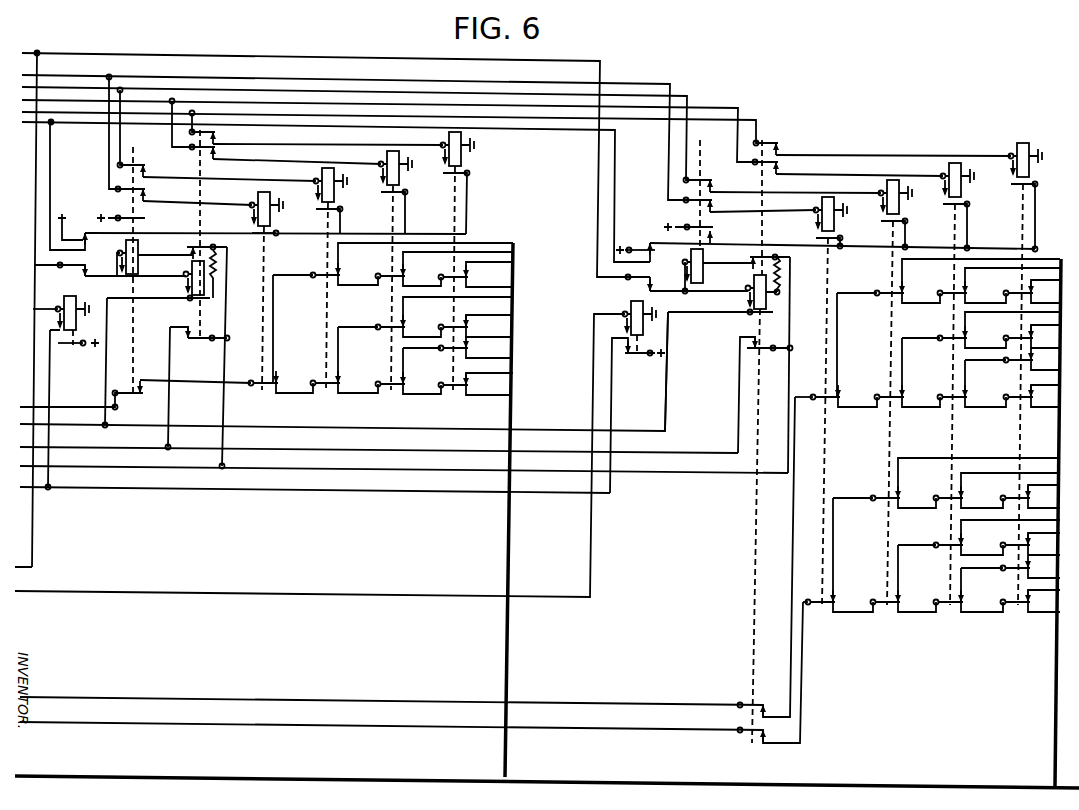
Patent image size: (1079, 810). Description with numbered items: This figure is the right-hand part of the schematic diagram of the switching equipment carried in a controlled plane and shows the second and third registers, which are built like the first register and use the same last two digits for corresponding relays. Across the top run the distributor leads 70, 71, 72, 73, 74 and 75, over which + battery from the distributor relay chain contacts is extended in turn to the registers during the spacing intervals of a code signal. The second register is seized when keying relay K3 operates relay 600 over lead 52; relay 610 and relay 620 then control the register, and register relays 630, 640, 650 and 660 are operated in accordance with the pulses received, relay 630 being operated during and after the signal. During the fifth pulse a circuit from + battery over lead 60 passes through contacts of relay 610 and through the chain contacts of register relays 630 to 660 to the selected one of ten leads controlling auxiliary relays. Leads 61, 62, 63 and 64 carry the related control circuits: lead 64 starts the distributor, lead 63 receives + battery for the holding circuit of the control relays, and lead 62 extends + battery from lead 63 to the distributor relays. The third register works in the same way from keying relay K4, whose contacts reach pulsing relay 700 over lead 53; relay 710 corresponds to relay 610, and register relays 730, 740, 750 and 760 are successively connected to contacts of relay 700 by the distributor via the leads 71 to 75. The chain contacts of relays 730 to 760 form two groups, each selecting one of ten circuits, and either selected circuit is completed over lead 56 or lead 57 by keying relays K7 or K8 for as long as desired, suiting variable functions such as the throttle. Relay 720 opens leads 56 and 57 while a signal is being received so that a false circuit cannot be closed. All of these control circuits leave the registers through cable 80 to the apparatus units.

The lead 70 is at (74, 50).
The lead 71 is at (71, 64).
The lead 72 is at (97, 86).
The lead 73 is at (728, 105).
The lead 74 is at (731, 114).
The lead 75 is at (555, 128).
The lead 60 is at (80, 396).
The lead 61 is at (79, 414).
The lead 62 is at (80, 446).
The lead 63 is at (80, 465).
The lead 64 is at (80, 486).
The lead 52 is at (32, 551).
The lead 53 is at (33, 591).
The lead 56 is at (33, 697).
The lead 57 is at (33, 722).
The cable 80 is at (70, 765).
The relay 600 is at (66, 296).
The relay 610 is at (131, 248).
The relay 620 is at (193, 268).
The register relay 630 is at (258, 195).
The register relay 640 is at (322, 170).
The register relay 650 is at (387, 156).
The register relay 660 is at (461, 140).
The pulsing relay 700 is at (631, 308).
The relay 710 is at (703, 262).
The relay 720 is at (754, 288).
The register relay 730 is at (822, 210).
The register relay 740 is at (887, 187).
The register relay 750 is at (949, 170).
The register relay 760 is at (1017, 145).